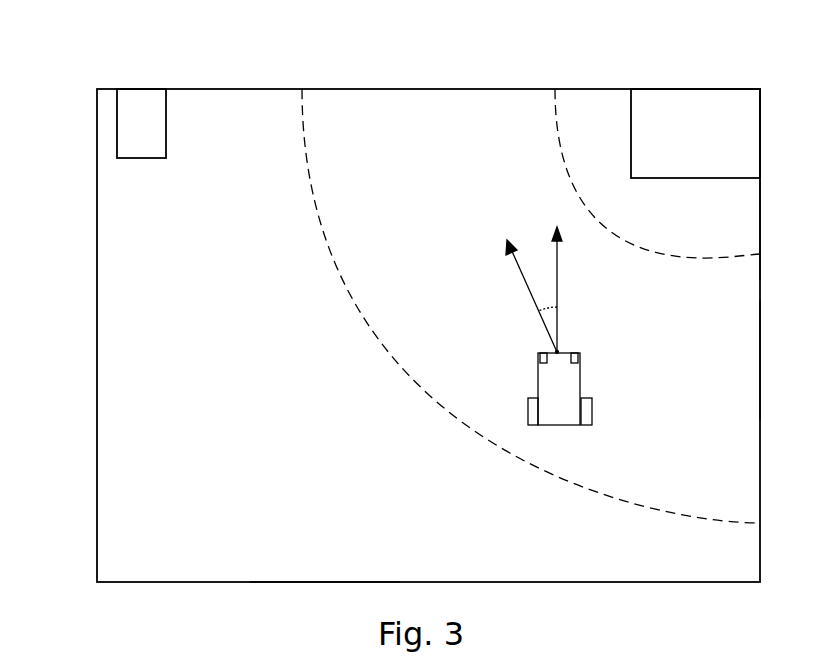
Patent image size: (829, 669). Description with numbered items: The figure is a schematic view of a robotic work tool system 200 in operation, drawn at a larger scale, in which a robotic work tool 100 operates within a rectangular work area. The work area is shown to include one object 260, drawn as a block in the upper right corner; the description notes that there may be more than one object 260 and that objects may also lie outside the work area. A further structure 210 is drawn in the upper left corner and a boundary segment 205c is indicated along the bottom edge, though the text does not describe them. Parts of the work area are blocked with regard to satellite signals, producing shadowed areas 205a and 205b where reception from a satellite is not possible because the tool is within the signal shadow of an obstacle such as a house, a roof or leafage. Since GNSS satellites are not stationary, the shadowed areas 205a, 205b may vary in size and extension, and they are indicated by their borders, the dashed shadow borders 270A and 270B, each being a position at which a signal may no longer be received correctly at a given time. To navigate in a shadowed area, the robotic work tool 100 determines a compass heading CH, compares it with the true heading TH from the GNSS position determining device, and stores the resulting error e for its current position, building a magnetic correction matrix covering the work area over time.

The robotic work tool 100 is at (583, 396).
The robotic work tool system 200 is at (115, 407).
The shadowed area 205a is at (740, 357).
The shadowed area 205b is at (740, 213).
The boundary wall (bottom) 205c is at (312, 572).
The charging station 210 is at (123, 113).
The object 260 is at (745, 115).
The shadow border 270A is at (303, 150).
The shadow border 270B is at (557, 150).